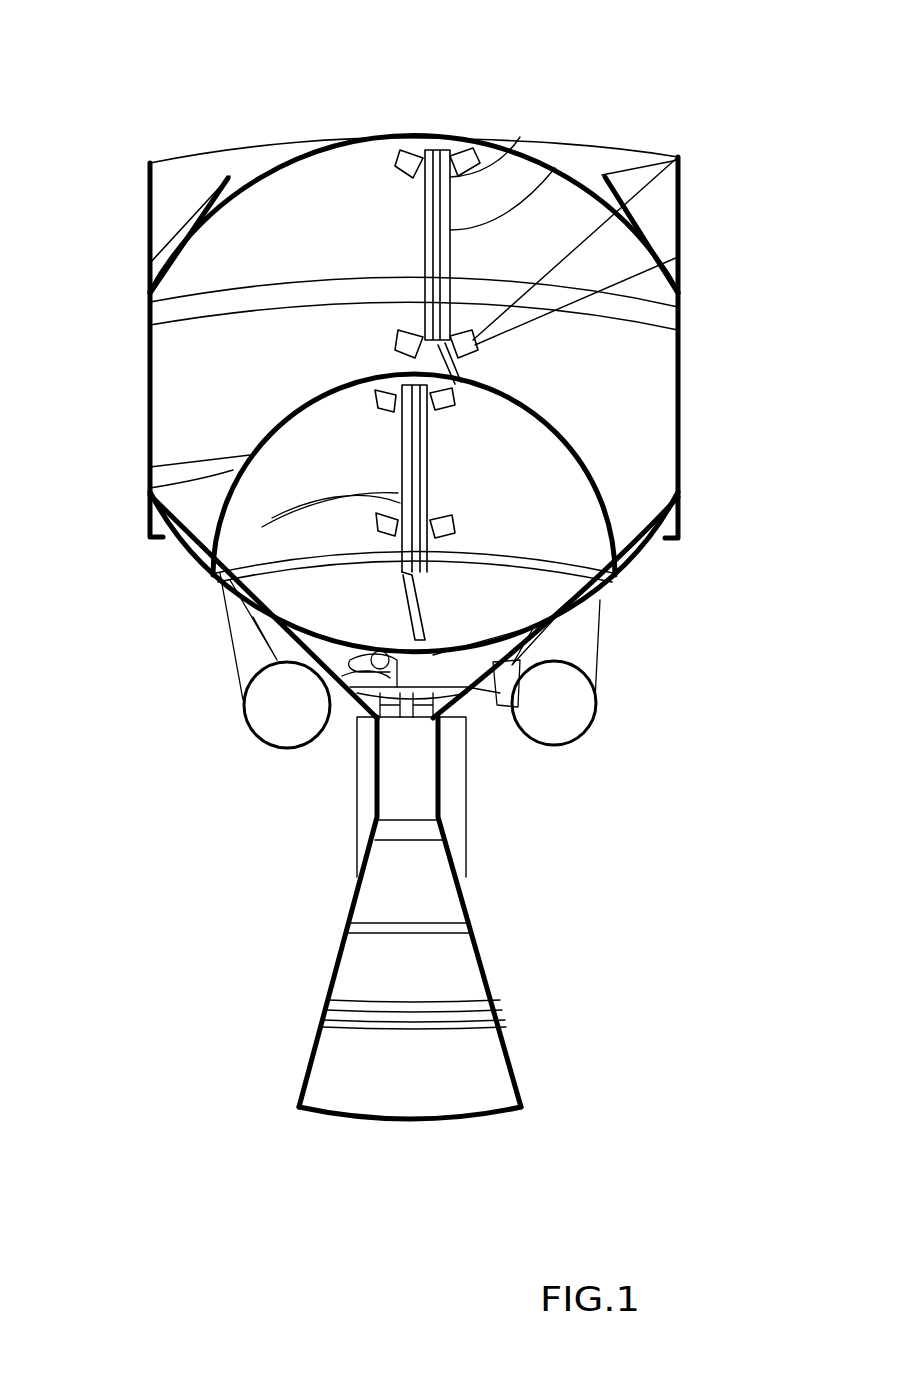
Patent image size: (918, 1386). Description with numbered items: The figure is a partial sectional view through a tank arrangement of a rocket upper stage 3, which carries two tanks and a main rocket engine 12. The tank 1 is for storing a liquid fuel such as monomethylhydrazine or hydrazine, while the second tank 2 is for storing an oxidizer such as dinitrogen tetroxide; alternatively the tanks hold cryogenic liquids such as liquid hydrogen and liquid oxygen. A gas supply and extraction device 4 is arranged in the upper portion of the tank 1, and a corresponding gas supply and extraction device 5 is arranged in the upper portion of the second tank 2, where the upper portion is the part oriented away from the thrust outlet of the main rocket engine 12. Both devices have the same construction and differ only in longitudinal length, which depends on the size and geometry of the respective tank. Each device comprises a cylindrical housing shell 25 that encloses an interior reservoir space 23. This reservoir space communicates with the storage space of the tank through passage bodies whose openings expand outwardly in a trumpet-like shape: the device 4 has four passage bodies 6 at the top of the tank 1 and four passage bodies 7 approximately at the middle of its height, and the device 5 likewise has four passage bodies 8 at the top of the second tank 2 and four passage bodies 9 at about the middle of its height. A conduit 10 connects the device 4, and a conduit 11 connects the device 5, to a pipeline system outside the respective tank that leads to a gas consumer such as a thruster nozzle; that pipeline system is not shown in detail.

The tank 1 is at (630, 380).
The second tank 2 is at (577, 508).
The rocket upper stage 3 is at (678, 257).
The gas supply and extraction device 4 is at (450, 257).
The gas supply and extraction device 5 is at (417, 458).
The passage bodies 6 is at (310, 158).
The passage bodies 7 is at (678, 157).
The passage bodies 8 is at (397, 352).
The passage bodies 9 is at (216, 548).
The conduit 10 is at (678, 307).
The conduit 11 is at (590, 612).
The main rocket engine 12 is at (437, 975).
The interior reservoir space 23 is at (450, 177).
The housing shell 25 is at (555, 168).